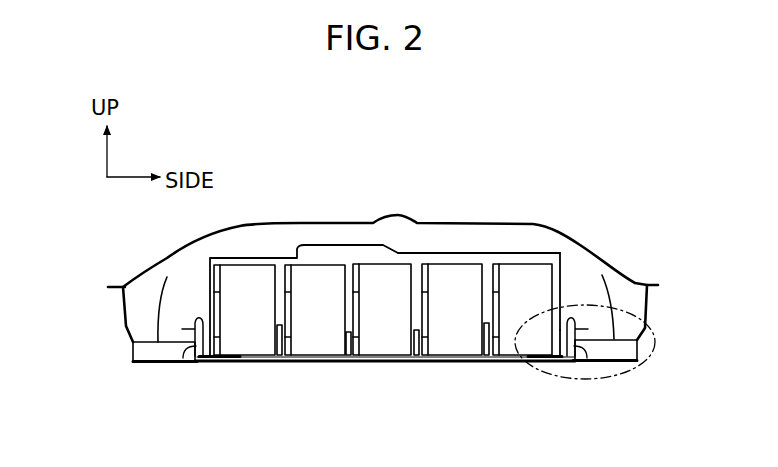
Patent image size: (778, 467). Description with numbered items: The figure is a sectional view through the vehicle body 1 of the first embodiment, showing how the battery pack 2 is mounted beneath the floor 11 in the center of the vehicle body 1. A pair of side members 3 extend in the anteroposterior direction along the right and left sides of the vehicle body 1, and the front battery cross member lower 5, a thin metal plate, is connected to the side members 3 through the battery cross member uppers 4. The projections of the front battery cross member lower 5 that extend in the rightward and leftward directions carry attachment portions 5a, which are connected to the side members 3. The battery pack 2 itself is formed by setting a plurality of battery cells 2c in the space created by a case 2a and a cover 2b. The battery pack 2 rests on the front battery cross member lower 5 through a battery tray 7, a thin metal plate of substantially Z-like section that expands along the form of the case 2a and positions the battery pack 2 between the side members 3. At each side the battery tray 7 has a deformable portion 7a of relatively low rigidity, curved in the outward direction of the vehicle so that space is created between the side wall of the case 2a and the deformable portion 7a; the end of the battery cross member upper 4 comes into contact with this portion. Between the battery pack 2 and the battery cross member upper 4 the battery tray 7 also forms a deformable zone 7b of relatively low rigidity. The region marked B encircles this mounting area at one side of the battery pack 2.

The vehicle body 1 is at (649, 191).
The battery pack 2 is at (270, 254).
The case 2a is at (562, 365).
The cover 2b is at (515, 250).
The battery cells 2c is at (452, 275).
The side members 3 is at (118, 297).
The battery cross member uppers 4 is at (128, 348).
The front battery cross member lower 5 is at (385, 366).
The attachment portions 5a is at (152, 366).
The battery tray 7 is at (233, 368).
The deformable portion 7a is at (182, 363).
The deformable zone 7b is at (198, 365).
The floor 11 is at (569, 232).
The enlarged region B is at (655, 380).